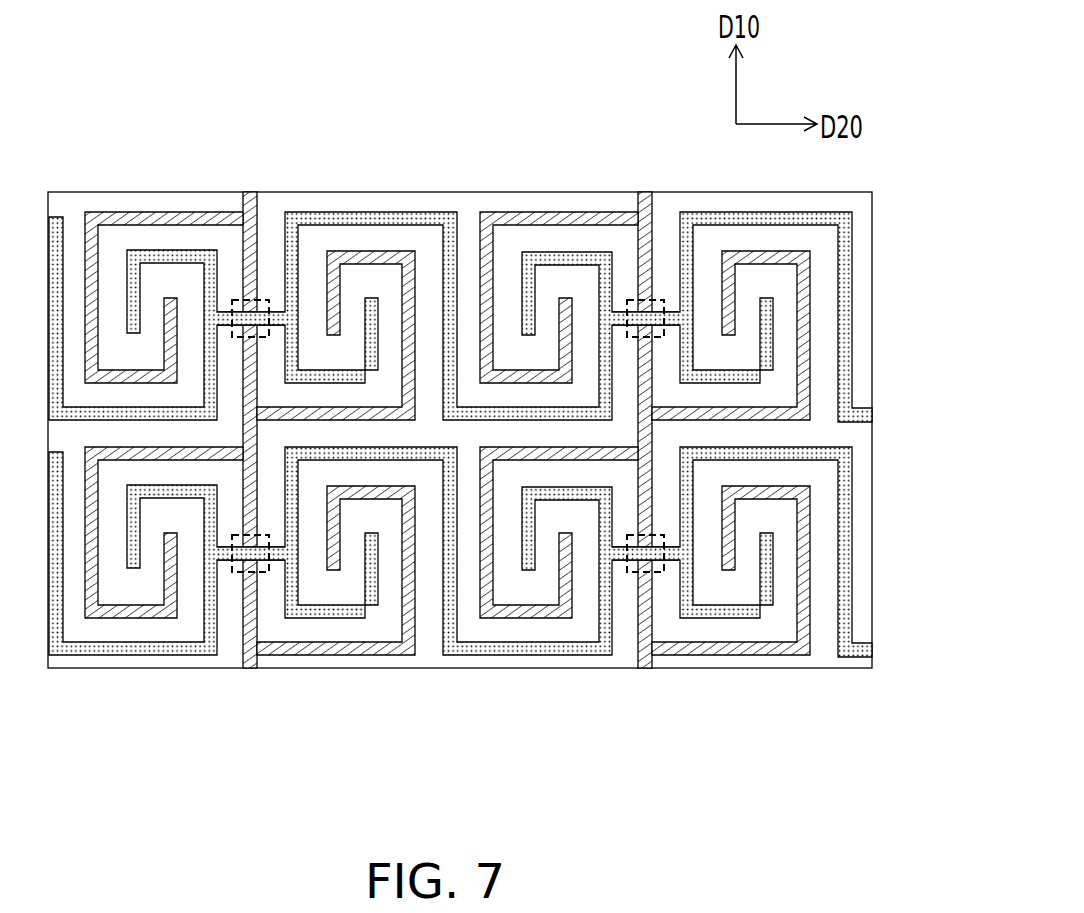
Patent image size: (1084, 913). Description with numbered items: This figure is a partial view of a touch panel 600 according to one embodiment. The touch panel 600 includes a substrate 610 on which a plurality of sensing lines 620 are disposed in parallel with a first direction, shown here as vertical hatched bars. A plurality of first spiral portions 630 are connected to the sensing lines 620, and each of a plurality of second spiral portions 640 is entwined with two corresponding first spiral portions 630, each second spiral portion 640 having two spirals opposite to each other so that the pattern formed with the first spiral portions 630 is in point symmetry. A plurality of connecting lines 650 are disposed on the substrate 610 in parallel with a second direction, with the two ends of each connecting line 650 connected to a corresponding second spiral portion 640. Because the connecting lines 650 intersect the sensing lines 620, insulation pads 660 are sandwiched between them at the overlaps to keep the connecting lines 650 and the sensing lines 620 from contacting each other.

The touch panel 600 is at (460, 506).
The substrate 610 is at (787, 668).
The sensing lines 620 is at (638, 608).
The first spiral portions 630 is at (347, 648).
The second spiral portions 640 is at (477, 648).
The connecting lines 650 is at (222, 577).
The insulation pads 660 is at (660, 572).